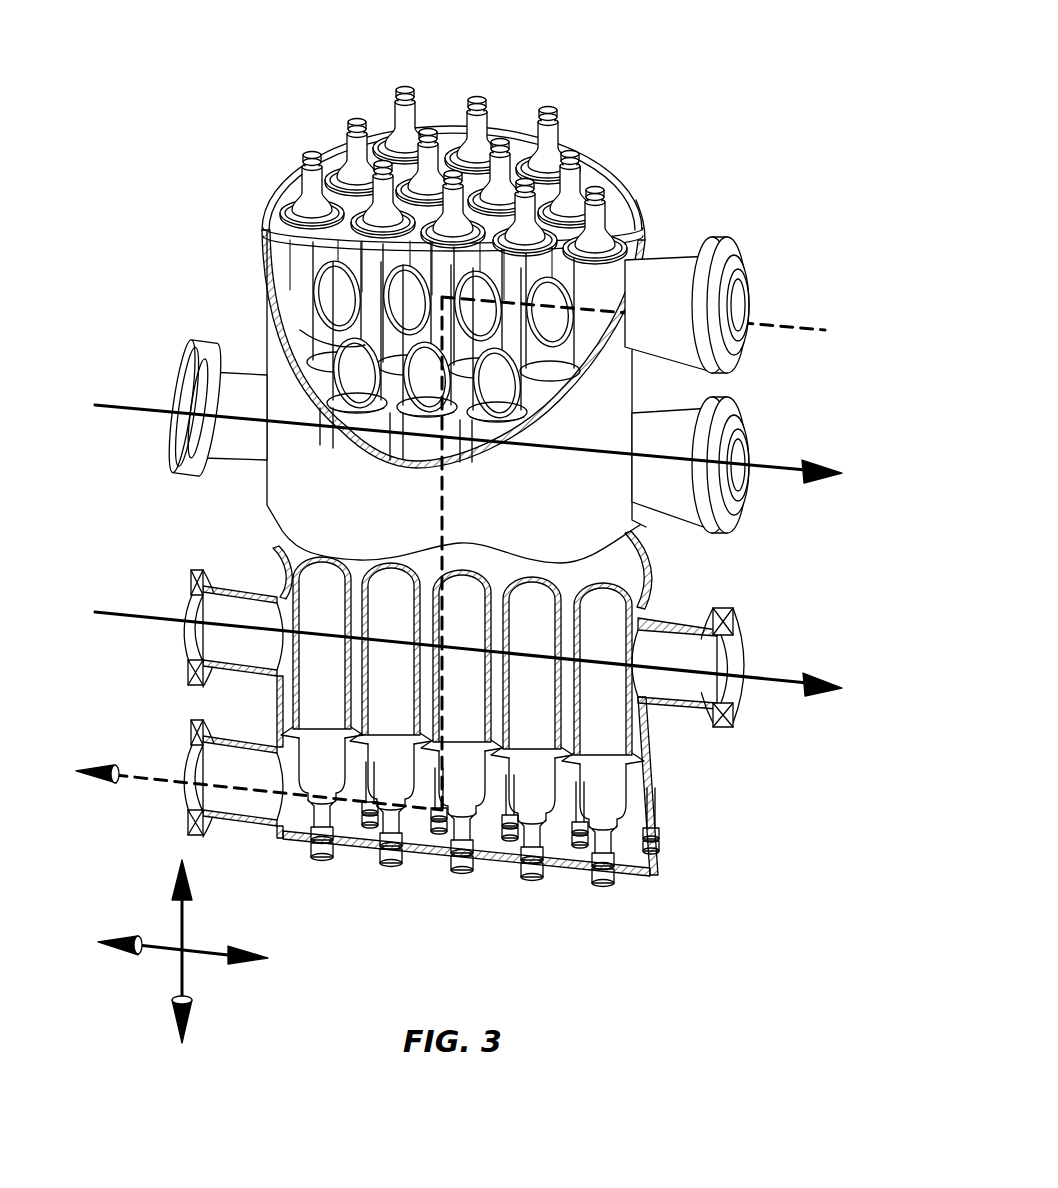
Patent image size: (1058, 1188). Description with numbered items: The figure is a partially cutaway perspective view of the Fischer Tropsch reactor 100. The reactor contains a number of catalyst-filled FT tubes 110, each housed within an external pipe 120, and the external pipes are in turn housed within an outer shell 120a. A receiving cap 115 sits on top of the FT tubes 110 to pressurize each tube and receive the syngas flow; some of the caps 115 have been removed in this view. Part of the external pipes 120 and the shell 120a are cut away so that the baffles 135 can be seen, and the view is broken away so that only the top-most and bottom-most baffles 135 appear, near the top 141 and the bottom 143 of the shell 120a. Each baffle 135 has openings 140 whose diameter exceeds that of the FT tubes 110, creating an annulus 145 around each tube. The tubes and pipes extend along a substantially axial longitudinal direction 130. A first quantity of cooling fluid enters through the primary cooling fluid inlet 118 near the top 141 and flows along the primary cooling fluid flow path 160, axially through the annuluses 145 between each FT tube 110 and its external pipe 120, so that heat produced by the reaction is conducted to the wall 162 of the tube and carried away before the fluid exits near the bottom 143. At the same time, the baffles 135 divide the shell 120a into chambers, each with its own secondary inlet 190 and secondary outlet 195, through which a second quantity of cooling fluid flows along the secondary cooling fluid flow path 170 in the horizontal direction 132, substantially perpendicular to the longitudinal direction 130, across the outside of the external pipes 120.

The FT reactor 100 is at (212, 192).
The FT tubes 110 is at (450, 535).
The receiving cap 115 is at (392, 125).
The primary cooling fluid inlet 118 is at (700, 255).
The external pipe 120 is at (266, 238).
The outer shell 120a is at (640, 196).
The longitudinal direction 130 is at (186, 918).
The horizontal direction 132 is at (160, 953).
The baffles 135 is at (300, 333).
The openings 140 is at (300, 328).
The top 141 is at (522, 122).
The bottom 143 is at (640, 888).
The annulus 145 is at (472, 470).
The primary cooling fluid flow path 160 is at (445, 516).
The wall 162 is at (312, 330).
The secondary cooling fluid flow path 170 is at (783, 464).
The secondary inlet 190 is at (172, 445).
The secondary outlet 195 is at (700, 412).